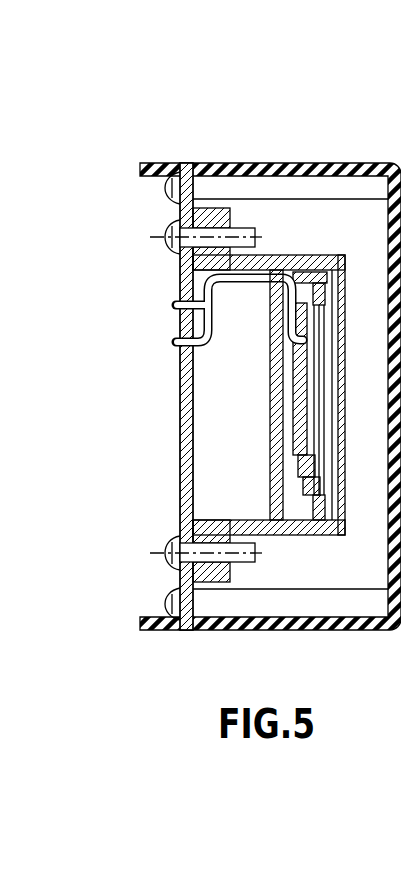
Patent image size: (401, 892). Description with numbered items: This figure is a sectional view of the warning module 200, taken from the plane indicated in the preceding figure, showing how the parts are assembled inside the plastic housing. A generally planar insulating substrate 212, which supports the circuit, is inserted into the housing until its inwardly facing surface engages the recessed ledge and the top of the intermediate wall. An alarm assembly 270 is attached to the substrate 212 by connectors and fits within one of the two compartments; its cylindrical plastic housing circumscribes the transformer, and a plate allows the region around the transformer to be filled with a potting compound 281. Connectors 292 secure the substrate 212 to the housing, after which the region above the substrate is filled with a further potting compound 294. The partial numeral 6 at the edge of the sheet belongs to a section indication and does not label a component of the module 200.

The warning module 200 is at (261, 90).
The insulating substrate 212 is at (174, 274).
The alarm assembly 270 is at (291, 236).
The potting compound 281 is at (225, 431).
The connectors 292 is at (172, 596).
The potting compound 294 is at (158, 458).
The section line indicator 6 is at (6, 195).